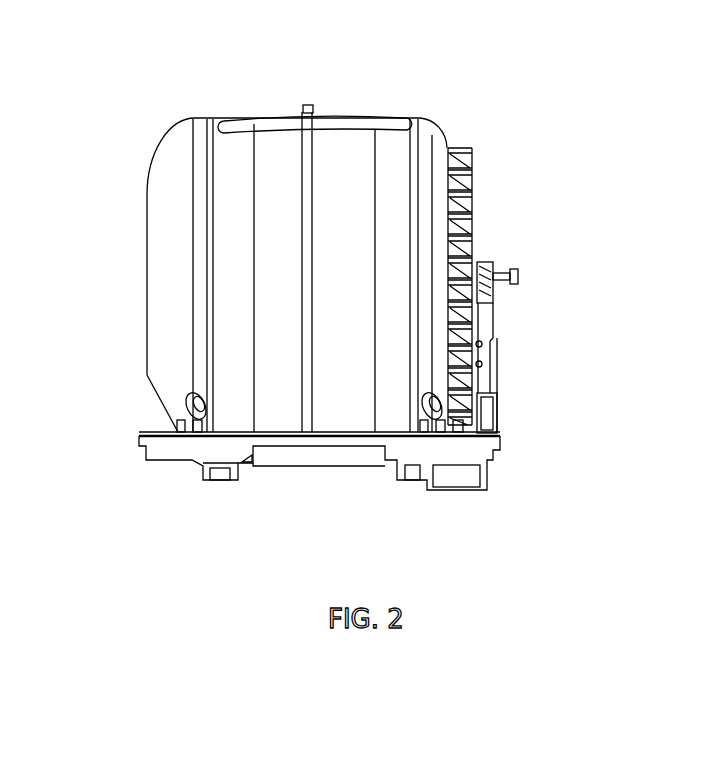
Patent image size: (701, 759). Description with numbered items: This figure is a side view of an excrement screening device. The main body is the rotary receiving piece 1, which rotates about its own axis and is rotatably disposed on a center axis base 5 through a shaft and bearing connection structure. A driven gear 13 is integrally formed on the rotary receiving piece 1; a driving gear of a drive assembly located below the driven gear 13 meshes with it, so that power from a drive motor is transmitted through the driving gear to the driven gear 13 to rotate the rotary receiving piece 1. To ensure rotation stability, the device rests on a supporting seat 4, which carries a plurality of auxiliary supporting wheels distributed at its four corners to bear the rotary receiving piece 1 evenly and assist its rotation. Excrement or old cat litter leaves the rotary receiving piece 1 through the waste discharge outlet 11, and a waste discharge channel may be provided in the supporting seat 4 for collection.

The rotary receiving piece 1 is at (278, 182).
The waste discharge outlet 11 is at (328, 122).
The driven gear 13 is at (456, 212).
The center axis base 5 is at (488, 268).
The supporting seat 4 is at (333, 446).